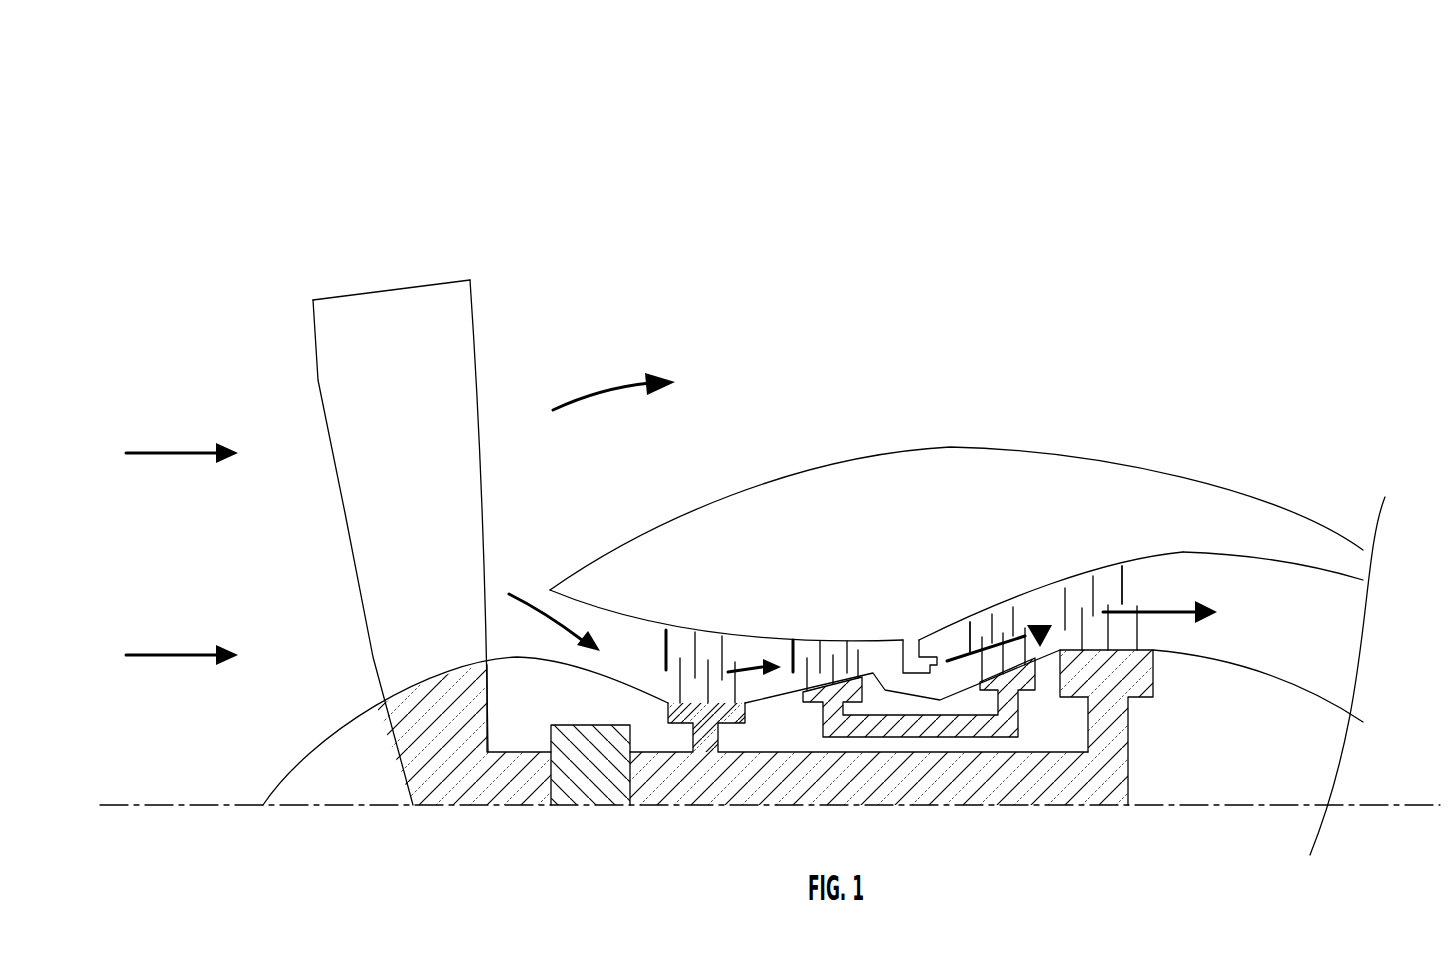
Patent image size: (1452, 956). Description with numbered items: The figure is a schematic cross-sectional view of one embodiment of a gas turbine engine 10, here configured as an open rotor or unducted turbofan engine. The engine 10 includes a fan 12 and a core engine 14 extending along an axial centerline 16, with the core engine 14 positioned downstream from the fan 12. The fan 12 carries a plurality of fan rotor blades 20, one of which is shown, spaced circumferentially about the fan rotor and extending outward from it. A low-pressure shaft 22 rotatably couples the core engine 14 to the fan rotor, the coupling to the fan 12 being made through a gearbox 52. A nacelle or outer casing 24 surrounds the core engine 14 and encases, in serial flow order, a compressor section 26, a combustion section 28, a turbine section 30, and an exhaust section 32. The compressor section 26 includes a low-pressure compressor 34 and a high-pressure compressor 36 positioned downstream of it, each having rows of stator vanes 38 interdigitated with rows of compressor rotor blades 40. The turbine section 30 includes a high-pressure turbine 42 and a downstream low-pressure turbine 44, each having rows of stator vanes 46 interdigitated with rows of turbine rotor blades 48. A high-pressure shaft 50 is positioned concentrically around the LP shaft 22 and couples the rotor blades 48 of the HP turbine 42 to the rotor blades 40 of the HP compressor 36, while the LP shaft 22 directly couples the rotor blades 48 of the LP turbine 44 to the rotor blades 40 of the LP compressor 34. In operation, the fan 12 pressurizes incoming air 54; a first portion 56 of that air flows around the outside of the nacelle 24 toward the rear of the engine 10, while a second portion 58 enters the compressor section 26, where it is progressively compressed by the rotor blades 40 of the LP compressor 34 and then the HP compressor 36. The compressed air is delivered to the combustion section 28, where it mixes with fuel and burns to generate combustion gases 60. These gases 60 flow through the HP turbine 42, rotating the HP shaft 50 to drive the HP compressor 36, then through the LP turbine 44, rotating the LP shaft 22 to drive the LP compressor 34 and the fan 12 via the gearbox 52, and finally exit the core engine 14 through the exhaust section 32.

The gas turbine engine 10 is at (274, 132).
The fan 12 is at (316, 230).
The core engine 14 is at (956, 417).
The axial centerline 16 is at (232, 806).
The fan rotor blades 20 is at (313, 333).
The low-pressure (LP) shaft 22 is at (785, 782).
The nacelle or outer casing 24 is at (753, 483).
The compressor section 26 is at (757, 604).
The combustion section 28 is at (904, 612).
The turbine section 30 is at (1023, 572).
The exhaust section 32 is at (1316, 623).
The low-pressure (LP) compressor 34 is at (689, 613).
The high-pressure (HP) compressor 36 is at (832, 617).
The stator vanes 38 is at (665, 651).
The compressor rotor blades 40 is at (680, 684).
The high-pressure (HP) turbine 42 is at (980, 599).
The low-pressure (LP) turbine 44 is at (1115, 547).
The stator vanes 46 is at (968, 640).
The turbine rotor blades 48 is at (1033, 657).
The high-pressure (HP) shaft 50 is at (985, 738).
The gearbox 52 is at (597, 785).
The incoming air 54 is at (162, 454).
The first portion of the pressurized air 56 is at (600, 394).
The second portion of the air 58 is at (534, 607).
The combustion gases 60 is at (1044, 624).